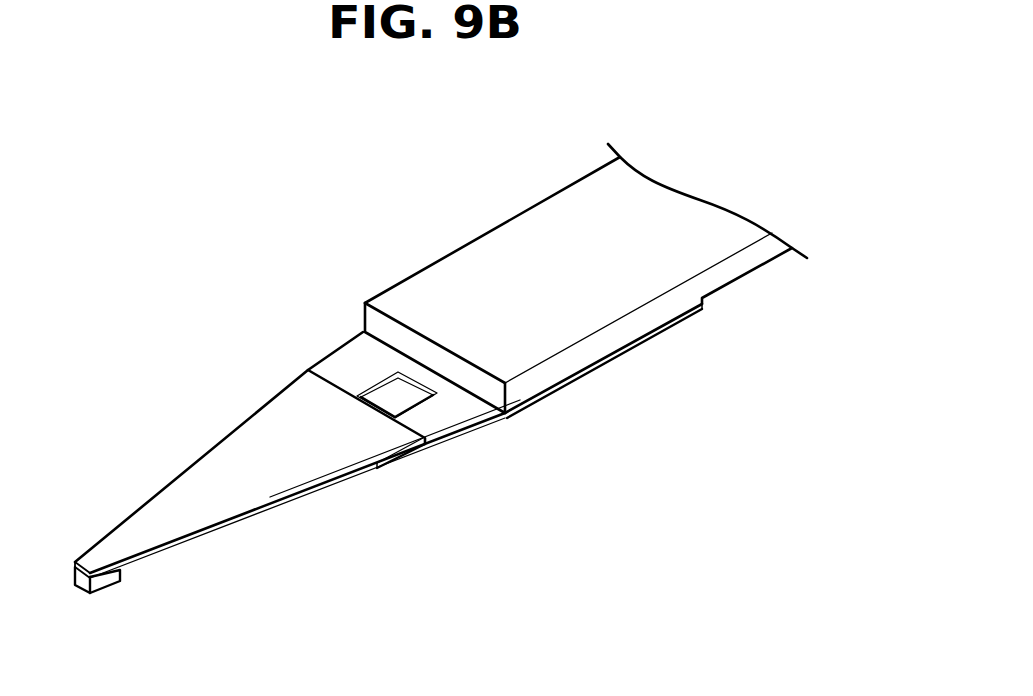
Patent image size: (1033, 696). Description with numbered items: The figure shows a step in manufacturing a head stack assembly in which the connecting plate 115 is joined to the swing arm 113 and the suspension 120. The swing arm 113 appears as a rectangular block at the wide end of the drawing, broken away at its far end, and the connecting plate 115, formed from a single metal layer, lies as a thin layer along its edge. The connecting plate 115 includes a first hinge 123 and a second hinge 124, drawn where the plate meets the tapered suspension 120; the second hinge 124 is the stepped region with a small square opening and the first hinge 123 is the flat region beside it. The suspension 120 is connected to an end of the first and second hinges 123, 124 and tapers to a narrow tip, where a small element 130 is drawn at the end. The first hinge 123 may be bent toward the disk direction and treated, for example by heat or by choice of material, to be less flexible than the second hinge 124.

The swing arm 113 is at (520, 227).
The connecting plate 115 is at (622, 371).
The suspension 120 is at (173, 527).
The first hinge 123 is at (437, 425).
The second hinge 124 is at (337, 360).
The tip 130 is at (98, 588).